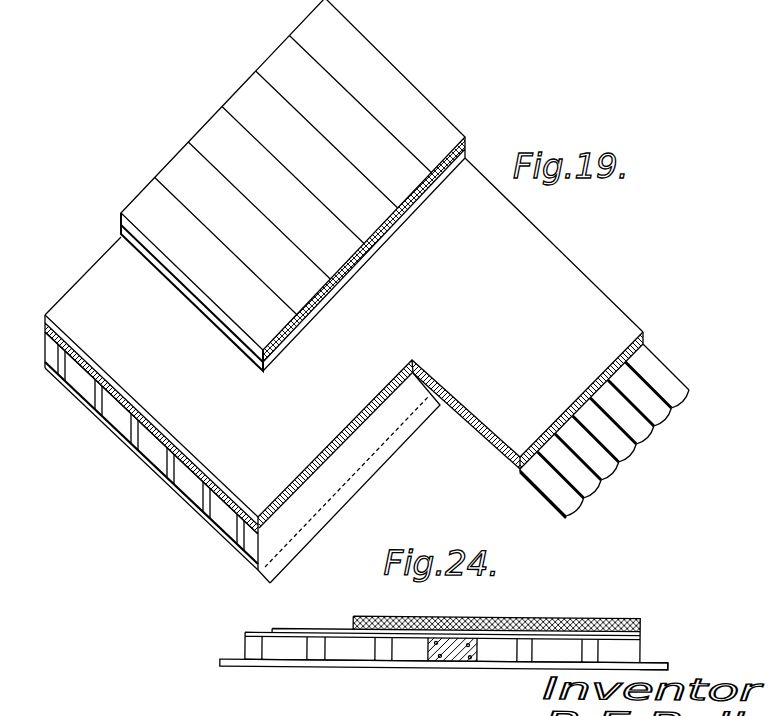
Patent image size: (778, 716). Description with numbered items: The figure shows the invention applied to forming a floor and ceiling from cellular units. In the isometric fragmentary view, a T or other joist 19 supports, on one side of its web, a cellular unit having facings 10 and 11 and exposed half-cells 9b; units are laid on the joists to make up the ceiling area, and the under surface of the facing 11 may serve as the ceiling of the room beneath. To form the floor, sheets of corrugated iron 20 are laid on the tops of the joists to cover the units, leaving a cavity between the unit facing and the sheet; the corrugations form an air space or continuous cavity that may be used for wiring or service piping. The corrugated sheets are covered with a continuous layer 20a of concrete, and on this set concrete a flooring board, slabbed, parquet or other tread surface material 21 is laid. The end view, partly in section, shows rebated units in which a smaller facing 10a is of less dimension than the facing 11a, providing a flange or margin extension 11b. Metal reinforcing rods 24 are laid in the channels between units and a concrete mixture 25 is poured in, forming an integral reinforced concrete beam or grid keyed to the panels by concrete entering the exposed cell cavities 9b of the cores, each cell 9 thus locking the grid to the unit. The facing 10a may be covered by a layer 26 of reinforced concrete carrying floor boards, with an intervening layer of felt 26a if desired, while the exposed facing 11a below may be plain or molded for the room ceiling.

In FIG. 24, the cell 9 is at (548, 654).
In FIG. 19, the exposed half-cells 9b is at (217, 513).
In FIG. 19, the facing 10 is at (92, 400).
In FIG. 19, the smaller facing 10a is at (293, 185).
In FIG. 24, the smaller facing 10a is at (257, 634).
In FIG. 19, the facing 11 is at (153, 467).
In FIG. 24, the larger facing 11a is at (383, 663).
In FIG. 24, the flange or margin extension 11b is at (659, 659).
In FIG. 19, the joist 19 is at (327, 530).
In FIG. 19, the sheets of corrugated iron 20 is at (320, 476).
In FIG. 19, the layer of concrete 20a is at (624, 332).
In FIG. 19, the flooring board or tread surface material 21 is at (466, 140).
In FIG. 24, the metal reinforcing rods 24 is at (460, 668).
In FIG. 24, the concrete mixture 25 is at (473, 666).
In FIG. 24, the layer of reinforced concrete 26 is at (315, 630).
In FIG. 24, the layer of felt 26a is at (637, 630).